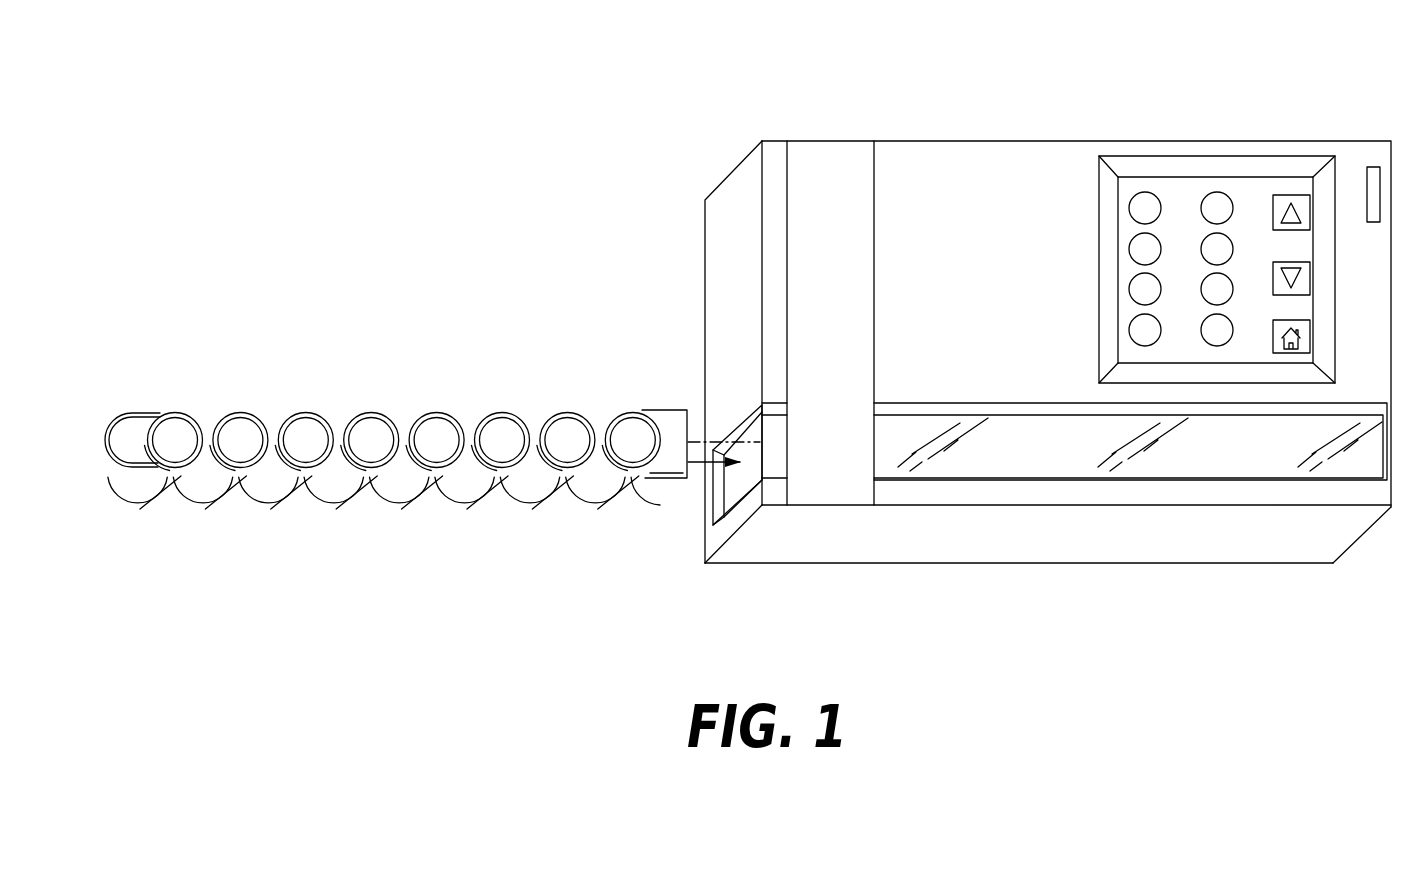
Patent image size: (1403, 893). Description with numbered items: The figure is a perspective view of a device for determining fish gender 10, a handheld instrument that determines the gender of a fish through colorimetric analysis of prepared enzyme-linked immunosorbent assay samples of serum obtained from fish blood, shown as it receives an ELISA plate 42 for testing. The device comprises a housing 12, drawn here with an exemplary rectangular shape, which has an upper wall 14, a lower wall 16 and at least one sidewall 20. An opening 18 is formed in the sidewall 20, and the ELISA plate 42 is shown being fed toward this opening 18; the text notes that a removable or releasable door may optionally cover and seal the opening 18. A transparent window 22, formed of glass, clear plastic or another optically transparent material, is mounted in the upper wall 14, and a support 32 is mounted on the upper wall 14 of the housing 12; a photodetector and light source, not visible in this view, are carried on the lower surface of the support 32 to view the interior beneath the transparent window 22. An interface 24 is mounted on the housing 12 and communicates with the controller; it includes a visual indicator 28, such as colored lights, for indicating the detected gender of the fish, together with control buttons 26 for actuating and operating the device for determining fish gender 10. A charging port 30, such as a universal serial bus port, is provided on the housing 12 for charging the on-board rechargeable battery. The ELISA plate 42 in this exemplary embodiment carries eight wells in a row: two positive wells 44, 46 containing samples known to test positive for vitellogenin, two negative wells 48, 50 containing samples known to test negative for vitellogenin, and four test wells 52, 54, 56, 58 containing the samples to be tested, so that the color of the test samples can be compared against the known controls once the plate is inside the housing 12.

The device for determining fish gender 10 is at (690, 128).
The housing 12 is at (1048, 141).
The upper wall 14 is at (1372, 352).
The lower wall 16 is at (700, 573).
The opening 18 is at (733, 420).
The sidewall 20 is at (720, 216).
The transparent window 22 is at (1290, 432).
The interface 24 is at (1218, 152).
The control buttons 26 is at (1290, 192).
The visual indicator 28 is at (1143, 187).
The charging port 30 is at (1372, 167).
The support 32 is at (830, 163).
The ELISA plate 42 is at (388, 358).
The positive well 44 is at (150, 468).
The positive well 46 is at (220, 468).
The negative well 48 is at (290, 468).
The negative well 50 is at (358, 468).
The test well 52 is at (428, 468).
The test well 54 is at (498, 468).
The test well 56 is at (565, 468).
The test well 58 is at (640, 468).